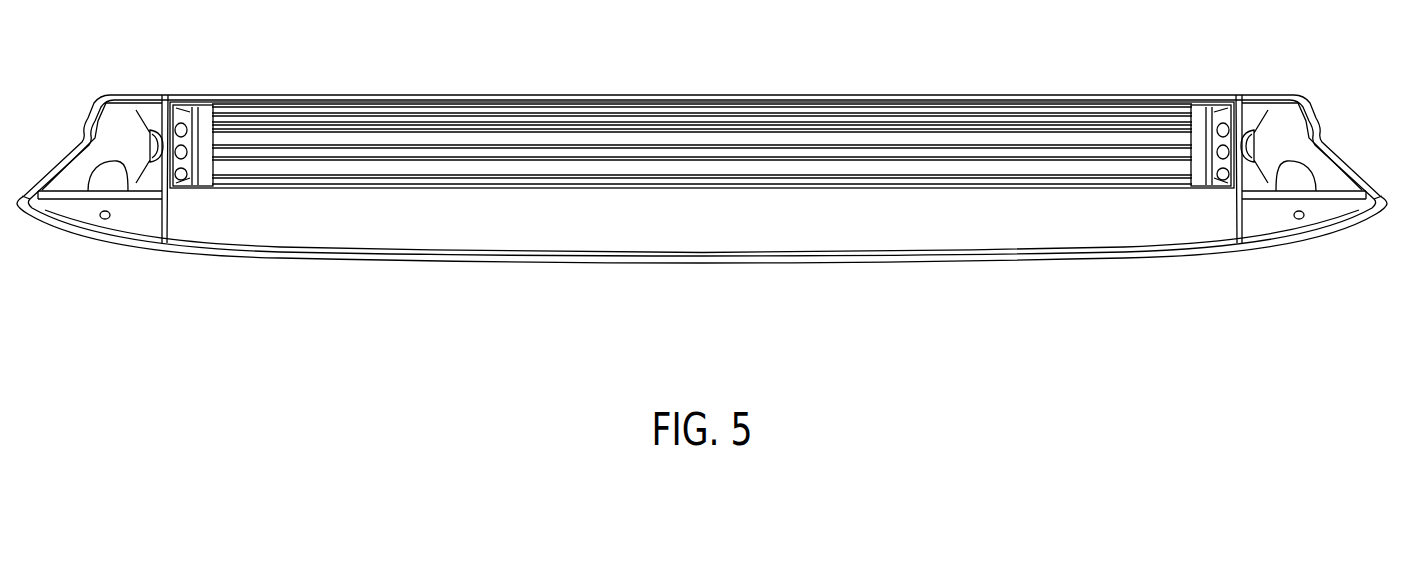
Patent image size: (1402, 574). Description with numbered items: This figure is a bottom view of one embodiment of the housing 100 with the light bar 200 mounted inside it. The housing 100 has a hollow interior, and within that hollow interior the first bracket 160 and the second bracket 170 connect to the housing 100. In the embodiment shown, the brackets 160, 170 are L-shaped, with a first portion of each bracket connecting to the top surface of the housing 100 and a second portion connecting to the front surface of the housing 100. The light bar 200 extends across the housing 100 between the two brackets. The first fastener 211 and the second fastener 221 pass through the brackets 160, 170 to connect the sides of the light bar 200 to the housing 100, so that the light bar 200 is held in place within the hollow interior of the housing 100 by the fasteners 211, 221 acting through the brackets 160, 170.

The housing 100 is at (479, 276).
The first bracket 160 is at (1315, 217).
The second bracket 170 is at (142, 218).
The light bar 200 is at (341, 195).
The first fastener 211 is at (1250, 130).
The second fastener 221 is at (152, 130).